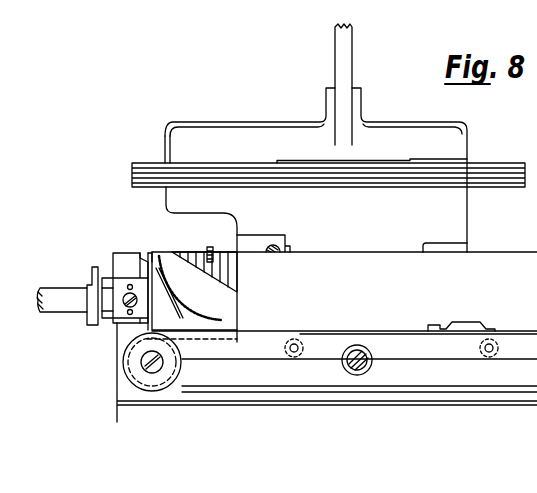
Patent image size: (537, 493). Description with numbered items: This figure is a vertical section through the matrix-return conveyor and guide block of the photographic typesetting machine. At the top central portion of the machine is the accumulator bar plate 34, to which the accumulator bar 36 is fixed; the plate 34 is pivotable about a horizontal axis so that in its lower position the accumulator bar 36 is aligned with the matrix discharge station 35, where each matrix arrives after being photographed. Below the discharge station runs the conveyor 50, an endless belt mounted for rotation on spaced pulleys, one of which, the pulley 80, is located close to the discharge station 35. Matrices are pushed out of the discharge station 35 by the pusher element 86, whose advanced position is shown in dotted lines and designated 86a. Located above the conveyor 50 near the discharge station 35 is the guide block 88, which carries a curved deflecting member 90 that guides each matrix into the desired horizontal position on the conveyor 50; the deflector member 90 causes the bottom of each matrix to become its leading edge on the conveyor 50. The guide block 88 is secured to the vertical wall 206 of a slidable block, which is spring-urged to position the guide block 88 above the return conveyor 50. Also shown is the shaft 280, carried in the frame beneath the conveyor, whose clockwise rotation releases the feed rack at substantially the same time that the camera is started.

The accumulator bar plate 34 is at (462, 134).
The accumulator bar 36 is at (487, 165).
The vertical wall 206 is at (153, 254).
The advanced position of pusher element 86a is at (148, 260).
The curved deflecting member 90 is at (158, 255).
The pusher element 86 is at (92, 274).
The guide block 88 is at (231, 275).
The matrix discharge station 35 is at (92, 330).
The pulley 80 is at (123, 372).
The conveyor 50 is at (352, 328).
The shaft 280 is at (367, 364).